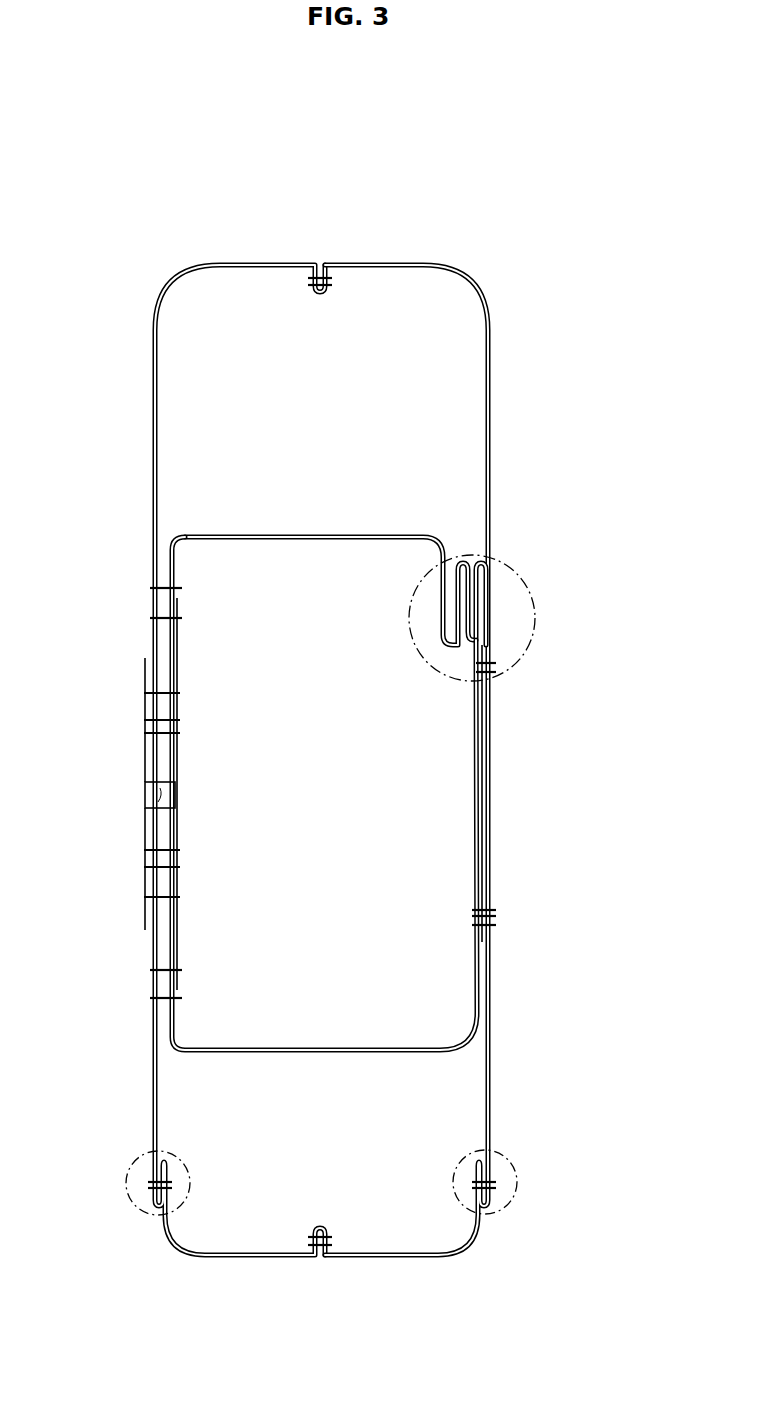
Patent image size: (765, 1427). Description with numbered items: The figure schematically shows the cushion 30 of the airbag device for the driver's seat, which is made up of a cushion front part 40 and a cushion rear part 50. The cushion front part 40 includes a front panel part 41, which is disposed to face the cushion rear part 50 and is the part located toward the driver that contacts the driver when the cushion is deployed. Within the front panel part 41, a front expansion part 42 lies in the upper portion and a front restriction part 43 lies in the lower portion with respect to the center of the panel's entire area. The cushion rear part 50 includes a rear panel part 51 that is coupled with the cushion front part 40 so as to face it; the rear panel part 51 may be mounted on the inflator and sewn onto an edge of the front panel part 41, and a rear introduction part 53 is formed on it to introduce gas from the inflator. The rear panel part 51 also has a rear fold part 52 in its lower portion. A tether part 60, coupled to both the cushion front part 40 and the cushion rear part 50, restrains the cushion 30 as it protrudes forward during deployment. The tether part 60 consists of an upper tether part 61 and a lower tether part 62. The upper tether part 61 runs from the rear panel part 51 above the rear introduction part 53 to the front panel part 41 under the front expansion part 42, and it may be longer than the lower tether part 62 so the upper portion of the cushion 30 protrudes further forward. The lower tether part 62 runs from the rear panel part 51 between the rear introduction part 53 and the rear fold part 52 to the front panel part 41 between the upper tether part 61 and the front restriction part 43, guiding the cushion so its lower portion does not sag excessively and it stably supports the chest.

The cushion 30 is at (643, 155).
The cushion front part 40 is at (324, 762).
The front panel part 41 is at (383, 265).
The front expansion part 42 is at (494, 605).
The front restriction part 43 is at (497, 1193).
The cushion rear part 50 is at (324, 762).
The rear panel part 51 is at (255, 265).
The rear fold part 52 is at (152, 1193).
The rear introduction part 53 is at (148, 795).
The tether part 60 is at (400, 793).
The upper tether part 61 is at (272, 540).
The lower tether part 62 is at (273, 1045).